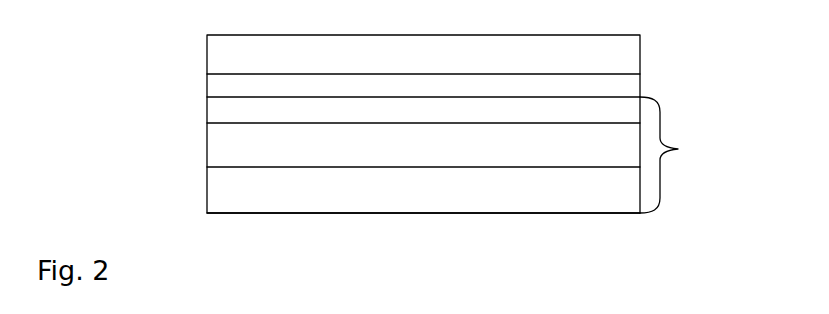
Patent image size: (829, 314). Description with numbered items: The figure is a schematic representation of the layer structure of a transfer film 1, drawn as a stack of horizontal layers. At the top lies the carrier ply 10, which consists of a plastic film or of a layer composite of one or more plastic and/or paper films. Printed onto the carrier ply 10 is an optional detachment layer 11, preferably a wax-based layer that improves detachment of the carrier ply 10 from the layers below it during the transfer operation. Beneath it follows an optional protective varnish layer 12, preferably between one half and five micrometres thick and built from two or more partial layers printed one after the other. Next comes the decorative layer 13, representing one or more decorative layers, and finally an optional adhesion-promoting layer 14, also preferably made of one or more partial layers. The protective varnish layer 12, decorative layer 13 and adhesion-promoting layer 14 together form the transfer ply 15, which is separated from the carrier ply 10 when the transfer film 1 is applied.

The transfer film 1 is at (717, 78).
The carrier ply 10 is at (218, 56).
The detachment layer 11 is at (218, 83).
The protective varnish layer 12 is at (218, 108).
The decorative layer 13 is at (218, 145).
The adhesion-promoting layer 14 is at (220, 183).
The transfer ply 15 is at (674, 155).